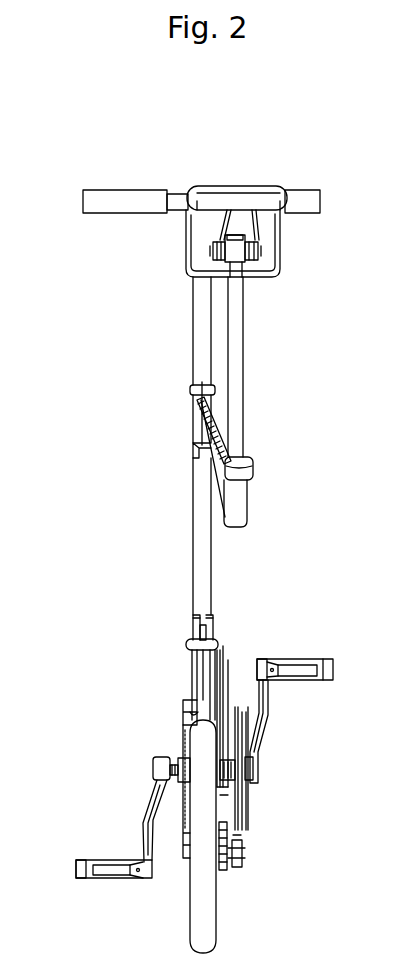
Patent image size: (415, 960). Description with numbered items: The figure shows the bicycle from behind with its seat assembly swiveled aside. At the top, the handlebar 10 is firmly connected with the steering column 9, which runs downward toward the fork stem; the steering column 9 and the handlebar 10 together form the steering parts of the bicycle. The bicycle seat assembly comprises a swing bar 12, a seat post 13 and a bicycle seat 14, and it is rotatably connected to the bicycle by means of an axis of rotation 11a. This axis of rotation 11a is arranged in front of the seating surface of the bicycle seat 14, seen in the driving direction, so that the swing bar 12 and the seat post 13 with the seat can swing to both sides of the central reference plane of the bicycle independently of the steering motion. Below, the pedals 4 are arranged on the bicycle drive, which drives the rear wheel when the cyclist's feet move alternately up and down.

The handlebar 10 is at (123, 200).
The bicycle seat 14 is at (202, 232).
The seat post 13 is at (238, 353).
The axis of rotation 11a is at (195, 420).
The swing bar 12 is at (218, 470).
The steering column 9 is at (203, 527).
The pedals 4 is at (107, 865).